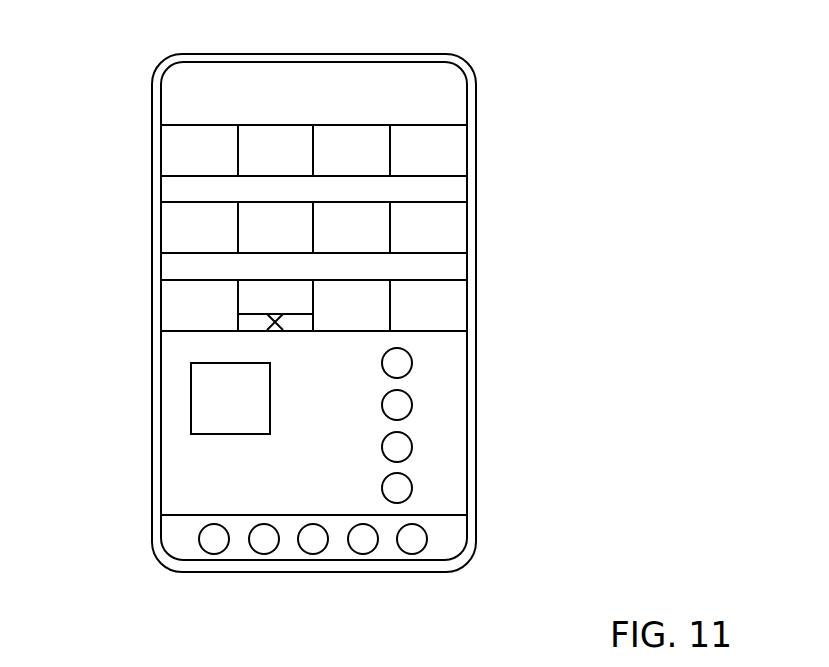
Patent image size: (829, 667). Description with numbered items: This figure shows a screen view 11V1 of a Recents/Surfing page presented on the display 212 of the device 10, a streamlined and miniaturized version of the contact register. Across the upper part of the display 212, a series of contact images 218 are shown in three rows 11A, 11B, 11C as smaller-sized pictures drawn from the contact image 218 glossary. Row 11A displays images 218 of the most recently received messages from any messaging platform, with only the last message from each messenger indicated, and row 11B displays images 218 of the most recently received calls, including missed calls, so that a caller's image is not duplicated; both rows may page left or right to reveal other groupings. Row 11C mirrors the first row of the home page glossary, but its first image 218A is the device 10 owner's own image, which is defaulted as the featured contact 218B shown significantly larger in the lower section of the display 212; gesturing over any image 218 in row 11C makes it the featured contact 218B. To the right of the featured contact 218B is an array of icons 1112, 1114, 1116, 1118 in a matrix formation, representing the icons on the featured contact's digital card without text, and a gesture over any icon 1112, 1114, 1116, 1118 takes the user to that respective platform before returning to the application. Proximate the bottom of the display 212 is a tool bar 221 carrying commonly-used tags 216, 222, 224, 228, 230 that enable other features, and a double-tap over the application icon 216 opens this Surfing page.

The device 10 is at (211, 53).
The display 212 is at (183, 100).
The contact images 218 is at (170, 140).
The first image 218A is at (170, 298).
The featured contact image 218B is at (205, 403).
The row of recent messages 11A is at (160, 153).
The row of recent calls 11B is at (160, 231).
The row mirroring home page glossary 11C is at (160, 310).
The icon 1112 is at (412, 363).
The icon 1114 is at (412, 405).
The icon 1116 is at (412, 447).
The icon 1118 is at (412, 488).
The tool bar 221 is at (172, 532).
The application icon 216 is at (214, 541).
The tag 222 is at (264, 541).
The tag 224 is at (314, 541).
The tag 228 is at (365, 541).
The tag 230 is at (420, 538).
The screen view 11V1 is at (490, 109).